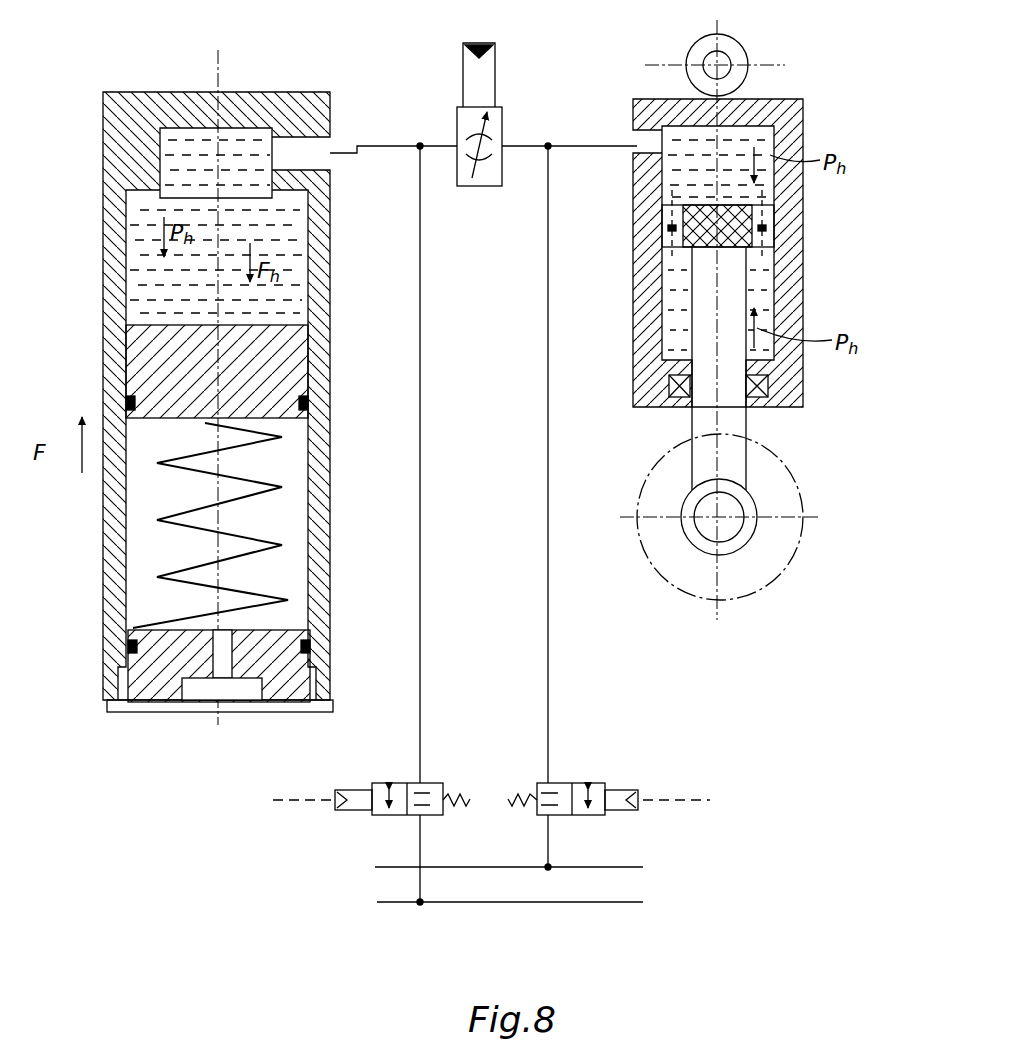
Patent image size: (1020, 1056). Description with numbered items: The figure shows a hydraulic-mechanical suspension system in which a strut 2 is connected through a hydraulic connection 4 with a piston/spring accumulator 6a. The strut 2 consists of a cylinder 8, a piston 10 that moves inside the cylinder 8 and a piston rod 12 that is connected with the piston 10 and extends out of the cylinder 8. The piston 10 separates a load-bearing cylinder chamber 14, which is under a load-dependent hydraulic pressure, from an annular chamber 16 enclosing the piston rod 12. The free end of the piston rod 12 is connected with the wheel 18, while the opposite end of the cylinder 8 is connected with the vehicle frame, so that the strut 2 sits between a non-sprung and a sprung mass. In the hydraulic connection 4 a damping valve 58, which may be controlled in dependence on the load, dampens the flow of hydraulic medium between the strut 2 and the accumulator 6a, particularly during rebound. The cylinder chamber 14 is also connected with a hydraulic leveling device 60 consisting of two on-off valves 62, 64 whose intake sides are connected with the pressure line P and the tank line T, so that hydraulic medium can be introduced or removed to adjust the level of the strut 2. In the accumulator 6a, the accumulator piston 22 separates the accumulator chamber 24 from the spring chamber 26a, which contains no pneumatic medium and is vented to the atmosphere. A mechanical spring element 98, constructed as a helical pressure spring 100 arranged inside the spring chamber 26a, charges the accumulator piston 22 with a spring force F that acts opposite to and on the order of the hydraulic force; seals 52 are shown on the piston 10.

The strut 2 is at (739, 320).
The hydraulic connection 4 is at (393, 145).
The piston/spring accumulator 6a is at (92, 706).
The cylinder 8 is at (788, 292).
The piston 10 is at (770, 222).
The piston rod 12 is at (745, 415).
The cylinder chamber 14 is at (673, 180).
The annular chamber 16 is at (675, 313).
The wheel 18 is at (797, 550).
The accumulator piston 22 is at (290, 357).
The accumulator chamber 24 is at (135, 280).
The spring chamber 26a is at (287, 452).
The piston seal 52 is at (670, 238).
The damping valve 58 is at (505, 100).
The hydraulic leveling device 60 is at (491, 819).
The on-off valve 62 is at (407, 783).
The on-off valve 64 is at (572, 783).
The mechanical spring element 98 is at (99, 642).
The helical pressure spring 100 is at (277, 608).